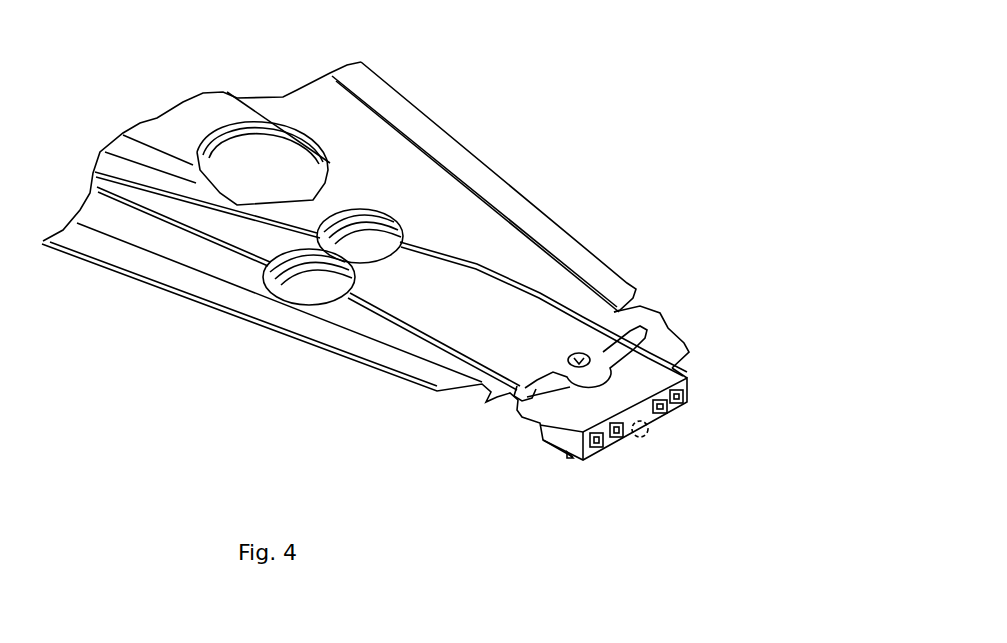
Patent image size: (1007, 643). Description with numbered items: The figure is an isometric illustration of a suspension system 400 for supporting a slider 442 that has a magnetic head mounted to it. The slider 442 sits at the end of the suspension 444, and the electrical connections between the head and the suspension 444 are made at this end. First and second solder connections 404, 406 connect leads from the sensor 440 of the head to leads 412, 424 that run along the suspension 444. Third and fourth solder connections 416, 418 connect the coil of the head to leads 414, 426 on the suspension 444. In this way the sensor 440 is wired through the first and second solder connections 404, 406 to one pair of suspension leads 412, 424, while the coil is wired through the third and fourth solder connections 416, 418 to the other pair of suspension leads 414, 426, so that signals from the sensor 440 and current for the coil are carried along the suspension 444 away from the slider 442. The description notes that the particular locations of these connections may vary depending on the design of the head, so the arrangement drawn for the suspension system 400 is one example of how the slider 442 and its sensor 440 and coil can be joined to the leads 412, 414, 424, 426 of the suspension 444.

The suspension system 400 is at (780, 108).
The first solder connection 404 is at (577, 458).
The second solder connection 406 is at (615, 438).
The lead 412 is at (377, 314).
The lead 414 is at (556, 298).
The third solder connection 416 is at (692, 397).
The fourth solder connection 418 is at (658, 414).
The lead 424 is at (422, 330).
The lead 426 is at (477, 266).
The sensor 440 is at (647, 432).
The slider 442 is at (530, 456).
The suspension 444 is at (506, 167).